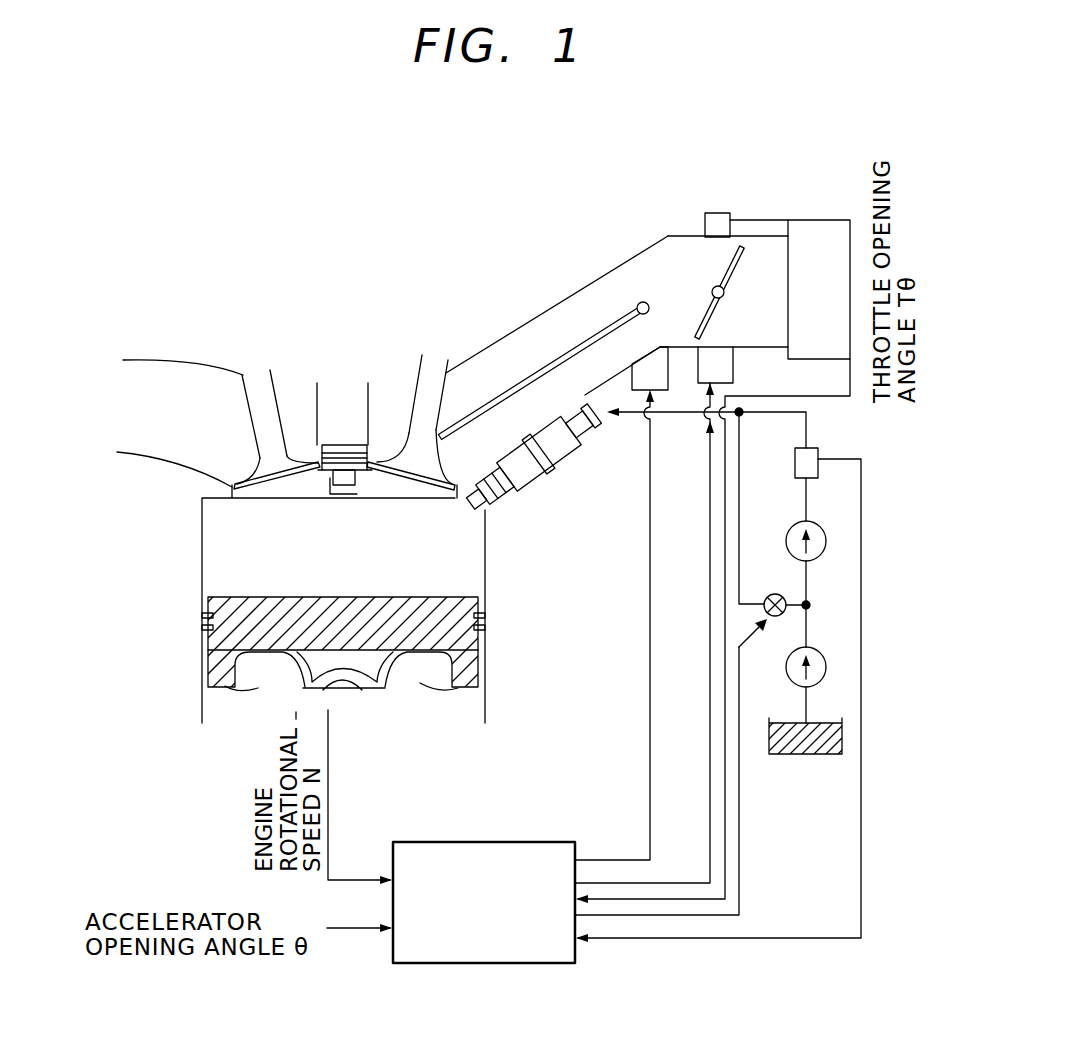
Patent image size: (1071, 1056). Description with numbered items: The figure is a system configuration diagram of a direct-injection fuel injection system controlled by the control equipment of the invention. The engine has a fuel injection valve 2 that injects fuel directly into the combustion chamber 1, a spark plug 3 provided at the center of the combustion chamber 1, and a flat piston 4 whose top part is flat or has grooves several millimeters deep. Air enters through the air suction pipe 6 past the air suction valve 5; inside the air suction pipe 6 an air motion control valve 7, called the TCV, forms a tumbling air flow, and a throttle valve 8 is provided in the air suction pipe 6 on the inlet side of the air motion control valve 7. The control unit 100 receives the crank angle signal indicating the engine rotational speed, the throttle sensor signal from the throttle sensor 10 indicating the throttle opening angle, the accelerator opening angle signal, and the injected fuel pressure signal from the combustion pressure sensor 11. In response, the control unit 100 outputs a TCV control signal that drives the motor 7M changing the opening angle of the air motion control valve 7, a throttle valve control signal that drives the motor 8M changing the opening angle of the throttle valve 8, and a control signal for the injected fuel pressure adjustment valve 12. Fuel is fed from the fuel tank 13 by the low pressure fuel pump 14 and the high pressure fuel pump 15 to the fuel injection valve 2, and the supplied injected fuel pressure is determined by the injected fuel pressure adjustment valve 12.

The combustion chamber 1 is at (458, 563).
The fuel injection valve 2 is at (527, 473).
The spark plug 3 is at (343, 410).
The flat piston 4 is at (457, 648).
The air suction valve 5 is at (423, 390).
The air suction pipe 6 is at (580, 313).
The air motion control valve 7 is at (640, 298).
The motor 7M is at (657, 392).
The throttle valve 8 is at (713, 289).
The motor 8M is at (733, 370).
The throttle sensor 10 is at (717, 213).
The combustion pressure sensor 11 is at (818, 450).
The injected fuel pressure adjustment valve 12 is at (771, 594).
The fuel tank 13 is at (804, 756).
The low pressure fuel pump 14 is at (788, 672).
The high pressure fuel pump 15 is at (791, 523).
The control unit 100 is at (488, 842).